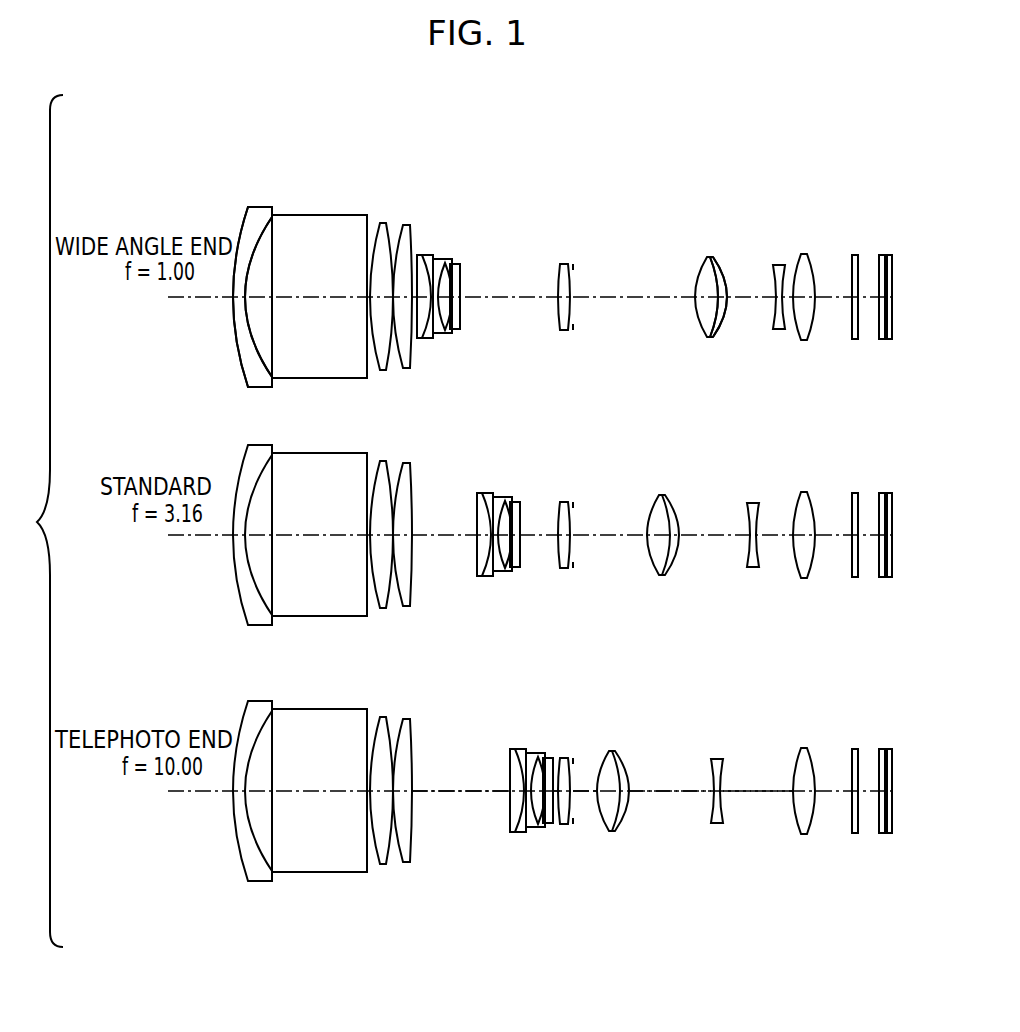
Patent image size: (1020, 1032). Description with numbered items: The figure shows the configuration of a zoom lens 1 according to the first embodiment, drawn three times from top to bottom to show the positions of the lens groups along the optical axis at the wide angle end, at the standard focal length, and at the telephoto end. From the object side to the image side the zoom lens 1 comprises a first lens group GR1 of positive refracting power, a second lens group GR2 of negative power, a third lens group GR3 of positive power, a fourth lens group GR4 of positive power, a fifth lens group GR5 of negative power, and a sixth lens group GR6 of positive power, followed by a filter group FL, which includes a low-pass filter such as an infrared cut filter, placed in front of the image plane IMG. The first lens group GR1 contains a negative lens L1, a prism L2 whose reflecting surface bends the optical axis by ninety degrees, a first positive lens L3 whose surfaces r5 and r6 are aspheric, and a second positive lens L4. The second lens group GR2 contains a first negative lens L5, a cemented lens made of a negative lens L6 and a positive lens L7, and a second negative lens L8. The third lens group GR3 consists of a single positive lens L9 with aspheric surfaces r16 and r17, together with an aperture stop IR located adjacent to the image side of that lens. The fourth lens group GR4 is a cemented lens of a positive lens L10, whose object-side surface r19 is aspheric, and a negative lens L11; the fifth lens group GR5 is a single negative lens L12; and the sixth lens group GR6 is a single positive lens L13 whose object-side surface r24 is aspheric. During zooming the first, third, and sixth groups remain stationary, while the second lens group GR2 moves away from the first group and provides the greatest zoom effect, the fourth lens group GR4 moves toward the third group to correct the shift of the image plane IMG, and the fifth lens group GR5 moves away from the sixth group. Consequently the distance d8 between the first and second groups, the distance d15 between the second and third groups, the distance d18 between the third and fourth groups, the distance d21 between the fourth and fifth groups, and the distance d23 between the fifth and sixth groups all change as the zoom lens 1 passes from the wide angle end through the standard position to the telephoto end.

The zoom lens 1 is at (552, 173).
The negative lens L1 is at (258, 212).
The prism L2 is at (317, 223).
The first positive lens L3 is at (383, 223).
The second positive lens L4 is at (406, 227).
The first negative lens L5 is at (427, 255).
The negative lens L6 is at (445, 262).
The positive lens L7 is at (455, 272).
The second negative lens L8 is at (460, 277).
The positive lens L9 is at (563, 262).
The aperture stop IR is at (573, 265).
The positive lens L10 is at (703, 258).
The negative lens L11 is at (715, 257).
The negative lens L12 is at (777, 262).
The positive lens L13 is at (808, 252).
The filter group FL is at (857, 252).
The image plane IMG is at (890, 253).
The first lens group GR1 is at (326, 538).
The second lens group GR2 is at (532, 630).
The third lens group GR3 is at (575, 559).
The fourth lens group GR4 is at (658, 559).
The fifth lens group GR5 is at (775, 630).
The sixth lens group GR6 is at (805, 557).
The surface r5 is at (377, 463).
The surface r6 is at (398, 468).
The surface r16 is at (557, 520).
The surface r17 is at (573, 518).
The surface r19 is at (647, 515).
The surface r24 is at (797, 512).
The distance d8 is at (468, 794).
The distance d15 is at (557, 796).
The distance d18 is at (583, 796).
The distance d21 is at (667, 794).
The distance d23 is at (758, 793).